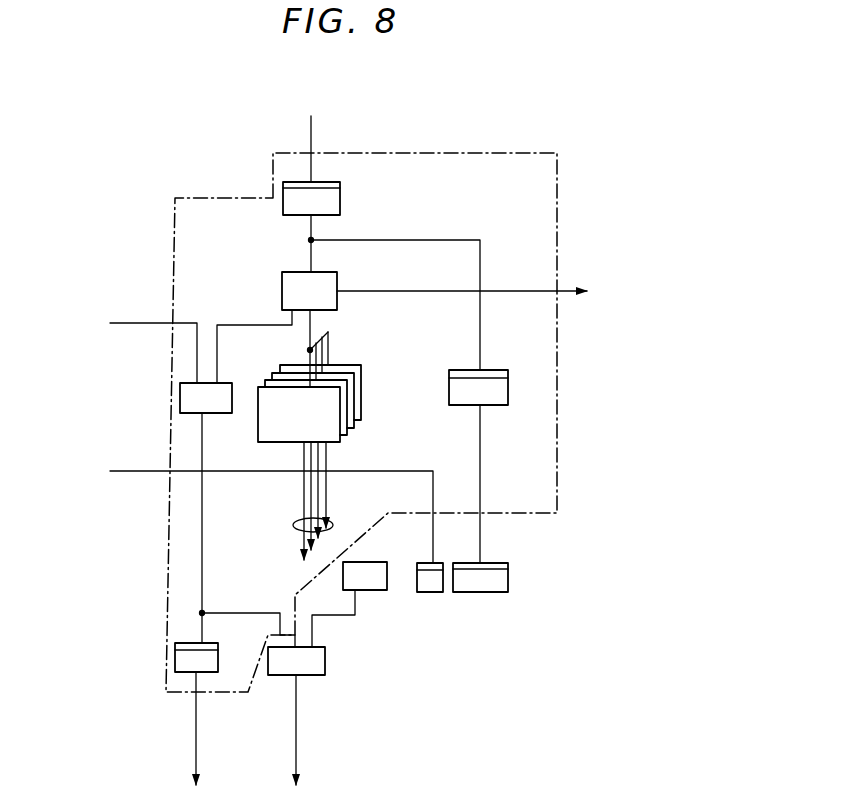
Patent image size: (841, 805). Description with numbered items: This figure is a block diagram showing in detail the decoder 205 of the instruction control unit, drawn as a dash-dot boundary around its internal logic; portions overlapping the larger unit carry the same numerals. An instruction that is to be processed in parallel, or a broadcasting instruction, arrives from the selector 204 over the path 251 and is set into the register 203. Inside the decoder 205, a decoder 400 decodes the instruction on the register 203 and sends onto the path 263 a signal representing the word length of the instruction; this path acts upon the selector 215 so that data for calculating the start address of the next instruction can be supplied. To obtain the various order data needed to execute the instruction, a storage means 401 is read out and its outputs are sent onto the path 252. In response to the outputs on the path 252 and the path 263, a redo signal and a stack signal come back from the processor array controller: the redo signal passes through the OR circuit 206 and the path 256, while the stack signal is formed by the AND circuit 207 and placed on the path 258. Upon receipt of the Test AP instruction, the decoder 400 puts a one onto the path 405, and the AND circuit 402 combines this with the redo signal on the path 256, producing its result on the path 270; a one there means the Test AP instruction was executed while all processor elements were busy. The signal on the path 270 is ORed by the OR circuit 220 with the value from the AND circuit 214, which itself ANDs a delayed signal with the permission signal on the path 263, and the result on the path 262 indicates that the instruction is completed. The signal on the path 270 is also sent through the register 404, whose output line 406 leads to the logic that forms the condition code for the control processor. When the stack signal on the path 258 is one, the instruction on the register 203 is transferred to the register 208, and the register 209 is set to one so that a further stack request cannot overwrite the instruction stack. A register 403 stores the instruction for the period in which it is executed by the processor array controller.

The decoder 205 is at (128, 198).
The selector 204 is at (337, 105).
The selector 215 is at (656, 293).
The OR circuit 206 is at (51, 324).
The AND circuit 207 is at (53, 468).
The path 251 is at (313, 129).
The register 203 is at (340, 190).
The decoder 400 is at (338, 275).
The path 263 is at (510, 287).
The path 256 is at (164, 323).
The path 405 is at (232, 322).
The AND circuit 402 is at (232, 383).
The storage means 401 is at (356, 358).
The register 403 is at (500, 370).
The path 258 is at (132, 469).
The path 252 is at (326, 520).
The AND circuit 214 is at (378, 562).
The register 209 is at (436, 563).
The register 208 is at (496, 563).
The path 270 is at (233, 611).
The register 404 is at (234, 652).
The OR circuit 220 is at (325, 654).
The output line 406 is at (191, 746).
The path 262 is at (291, 750).